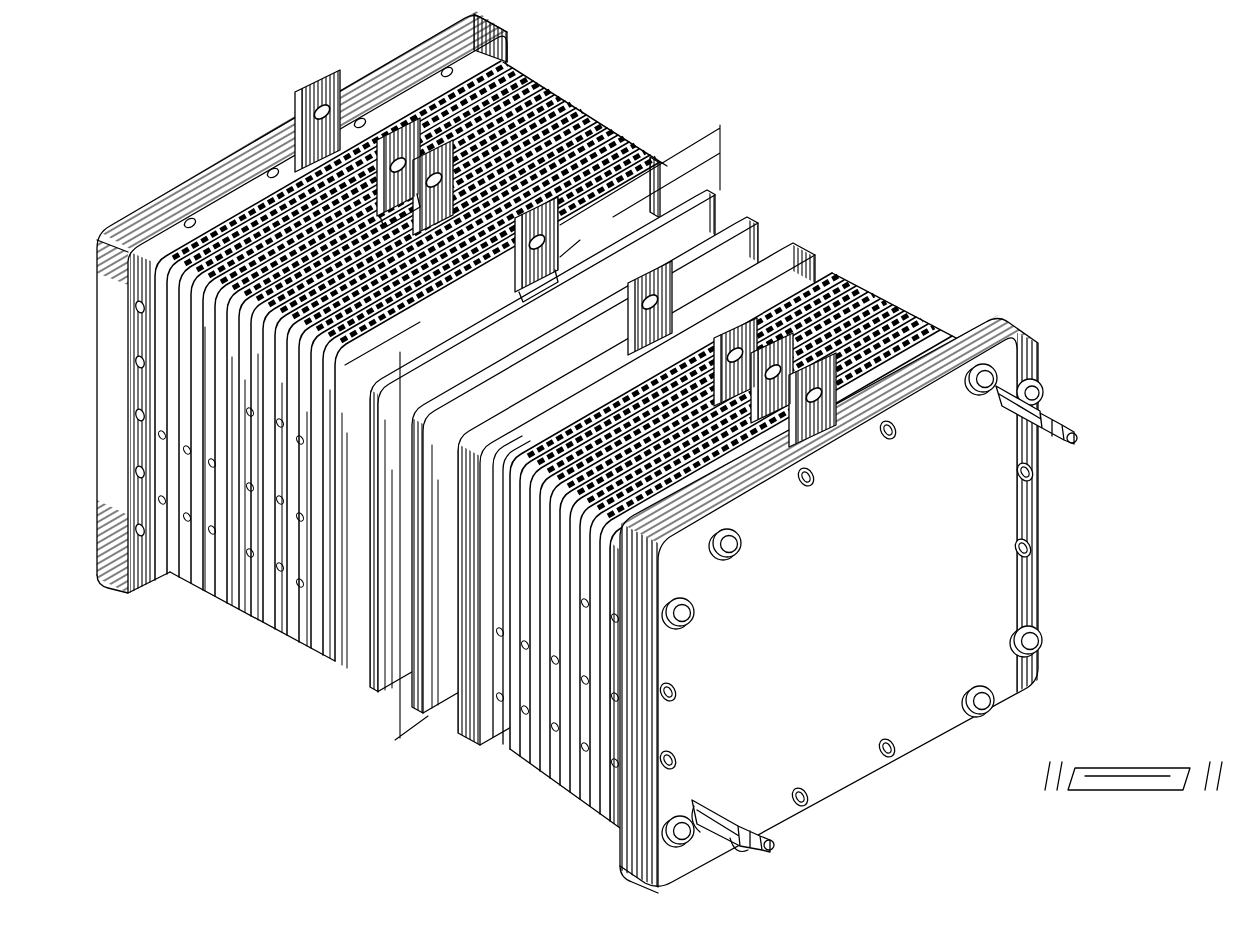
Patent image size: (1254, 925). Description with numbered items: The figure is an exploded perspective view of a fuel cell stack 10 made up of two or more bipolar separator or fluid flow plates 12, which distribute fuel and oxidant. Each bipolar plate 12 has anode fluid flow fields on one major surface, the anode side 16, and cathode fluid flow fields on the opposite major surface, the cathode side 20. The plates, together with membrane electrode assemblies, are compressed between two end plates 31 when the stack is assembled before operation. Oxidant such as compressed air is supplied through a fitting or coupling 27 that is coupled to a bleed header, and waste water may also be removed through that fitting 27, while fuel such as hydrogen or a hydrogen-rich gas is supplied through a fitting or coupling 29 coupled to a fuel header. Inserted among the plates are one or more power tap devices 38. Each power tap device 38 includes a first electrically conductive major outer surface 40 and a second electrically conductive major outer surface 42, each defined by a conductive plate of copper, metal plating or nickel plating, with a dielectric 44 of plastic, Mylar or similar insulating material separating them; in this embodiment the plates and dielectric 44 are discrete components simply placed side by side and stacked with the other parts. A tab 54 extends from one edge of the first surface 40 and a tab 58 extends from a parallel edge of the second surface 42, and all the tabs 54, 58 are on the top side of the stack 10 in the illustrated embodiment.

The fuel cell stack 10 is at (1030, 118).
The bipolar separator plate 12 is at (547, 451).
The anode side 16 is at (806, 248).
The cathode side 20 is at (345, 657).
The fitting 27 is at (775, 845).
The fitting 29 is at (1070, 444).
The end plate 31 is at (536, 451).
The power tap device 38 is at (586, 108).
The first major outer surface 40 is at (478, 742).
The second major outer surface 42 is at (368, 672).
The dielectric 44 is at (727, 222).
The tab 54 is at (512, 77).
The tab 58 is at (393, 117).